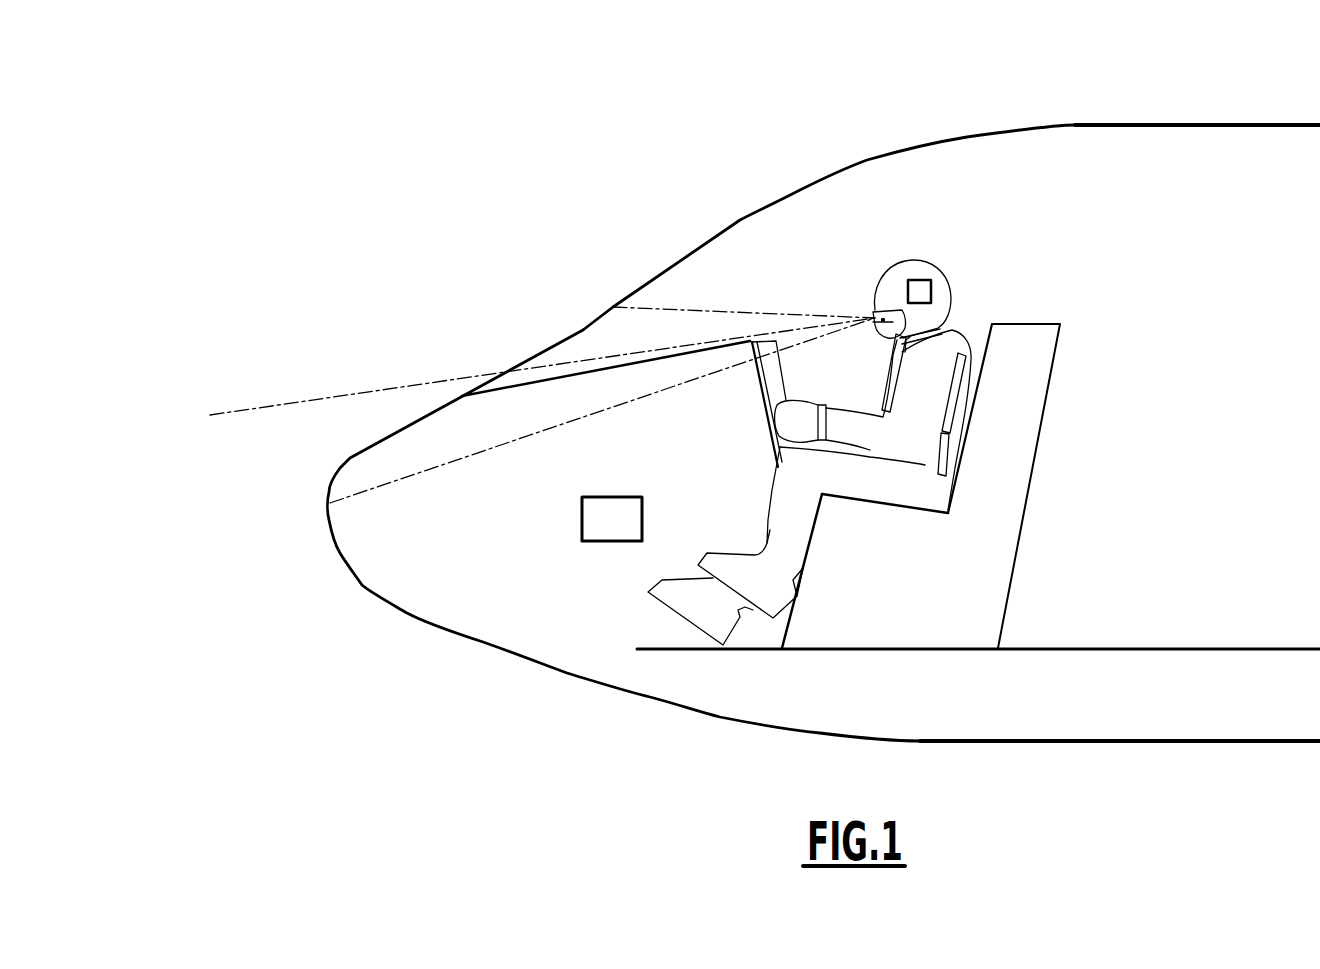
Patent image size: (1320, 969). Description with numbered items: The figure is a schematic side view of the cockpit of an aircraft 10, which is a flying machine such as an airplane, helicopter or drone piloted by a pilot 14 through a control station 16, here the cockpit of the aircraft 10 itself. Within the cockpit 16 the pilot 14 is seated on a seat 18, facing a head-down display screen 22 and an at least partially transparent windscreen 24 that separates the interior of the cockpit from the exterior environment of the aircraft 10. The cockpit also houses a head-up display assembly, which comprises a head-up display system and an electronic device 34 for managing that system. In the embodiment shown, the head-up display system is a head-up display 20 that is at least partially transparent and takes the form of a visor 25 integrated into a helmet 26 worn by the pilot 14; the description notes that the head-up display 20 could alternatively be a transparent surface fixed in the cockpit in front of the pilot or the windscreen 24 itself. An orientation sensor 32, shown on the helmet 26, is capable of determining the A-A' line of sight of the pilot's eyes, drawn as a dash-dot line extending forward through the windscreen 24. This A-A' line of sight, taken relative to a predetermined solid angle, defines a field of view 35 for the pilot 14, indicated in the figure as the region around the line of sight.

The aircraft 10 is at (1210, 120).
The pilot 14 is at (936, 350).
The control station 16 is at (870, 206).
The seat 18 is at (977, 560).
The head-up display 20 is at (868, 316).
The head-down display screen 22 is at (774, 395).
The windscreen 24 is at (516, 358).
The visor 25 is at (881, 338).
The helmet 26 is at (950, 293).
The orientation sensor 32 is at (920, 290).
The electronic device 34 is at (626, 532).
The field of view 35 is at (698, 305).